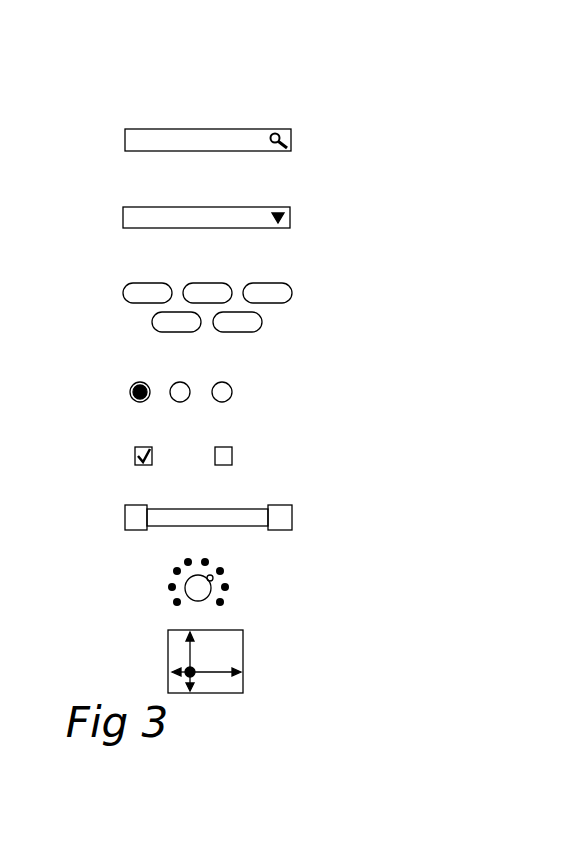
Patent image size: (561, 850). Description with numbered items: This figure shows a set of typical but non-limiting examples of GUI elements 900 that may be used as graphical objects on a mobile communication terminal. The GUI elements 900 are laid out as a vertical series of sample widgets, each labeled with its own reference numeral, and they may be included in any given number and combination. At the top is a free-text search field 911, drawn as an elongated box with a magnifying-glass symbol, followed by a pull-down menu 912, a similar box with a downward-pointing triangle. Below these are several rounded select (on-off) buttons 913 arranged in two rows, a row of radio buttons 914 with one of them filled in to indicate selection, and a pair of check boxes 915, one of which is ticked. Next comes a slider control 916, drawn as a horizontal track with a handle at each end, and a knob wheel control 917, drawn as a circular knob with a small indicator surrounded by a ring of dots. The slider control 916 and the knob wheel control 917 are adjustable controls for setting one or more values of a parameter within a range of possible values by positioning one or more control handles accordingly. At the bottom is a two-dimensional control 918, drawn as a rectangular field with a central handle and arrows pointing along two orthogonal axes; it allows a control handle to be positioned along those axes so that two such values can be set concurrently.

The GUI elements 900 is at (306, 30).
The free-text search field 911 is at (125, 133).
The pull-down menu 912 is at (123, 209).
The select (on-off) buttons 913 is at (123, 289).
The radio buttons 914 is at (130, 387).
The check boxes 915 is at (135, 455).
The slider control 916 is at (125, 512).
The knob wheel control 917 is at (186, 579).
The two-dimensional control 918 is at (188, 670).